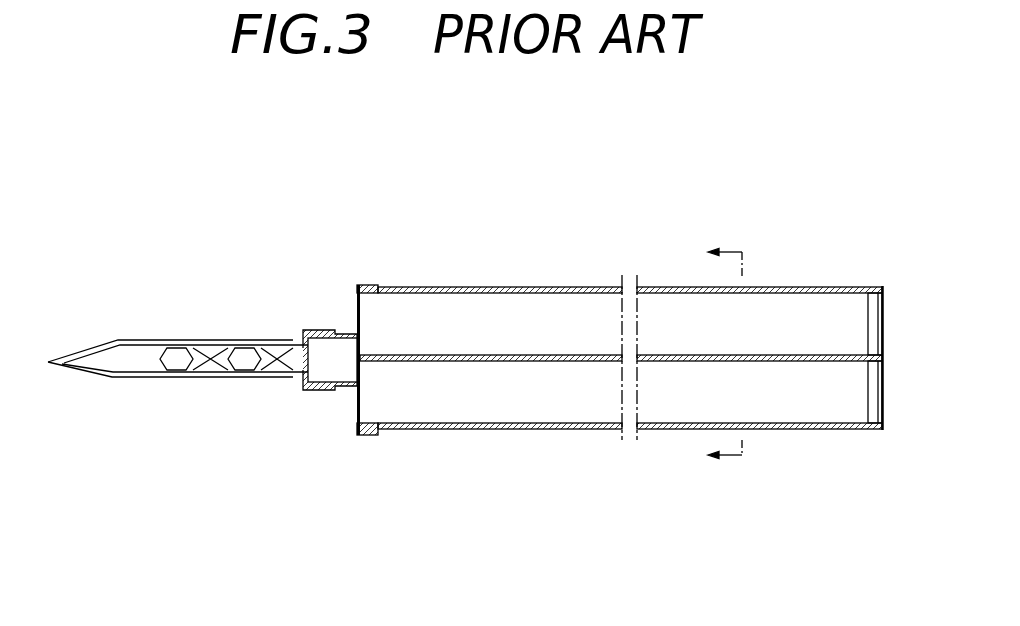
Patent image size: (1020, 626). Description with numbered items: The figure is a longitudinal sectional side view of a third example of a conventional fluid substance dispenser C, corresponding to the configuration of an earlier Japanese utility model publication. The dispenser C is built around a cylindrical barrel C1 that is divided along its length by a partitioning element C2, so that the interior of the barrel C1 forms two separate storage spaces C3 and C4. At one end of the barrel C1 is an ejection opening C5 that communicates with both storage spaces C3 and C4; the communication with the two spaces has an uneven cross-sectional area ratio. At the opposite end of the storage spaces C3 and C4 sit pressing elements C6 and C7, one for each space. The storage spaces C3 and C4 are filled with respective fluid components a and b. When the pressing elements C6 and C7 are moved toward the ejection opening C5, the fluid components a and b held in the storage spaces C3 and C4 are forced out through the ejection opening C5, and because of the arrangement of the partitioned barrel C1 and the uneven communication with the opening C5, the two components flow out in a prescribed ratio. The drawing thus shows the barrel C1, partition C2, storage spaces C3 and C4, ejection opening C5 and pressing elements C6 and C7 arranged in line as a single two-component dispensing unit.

The conventional fluid substance dispenser C is at (766, 209).
The cylindrical barrel C1 is at (475, 430).
The partitioning element C2 is at (502, 357).
The storage space C3 is at (585, 410).
The storage space C4 is at (478, 302).
The ejection opening C5 is at (343, 367).
The pressing element C6 is at (868, 330).
The pressing element C7 is at (868, 403).
The fluid component a is at (810, 481).
The fluid component b is at (798, 259).